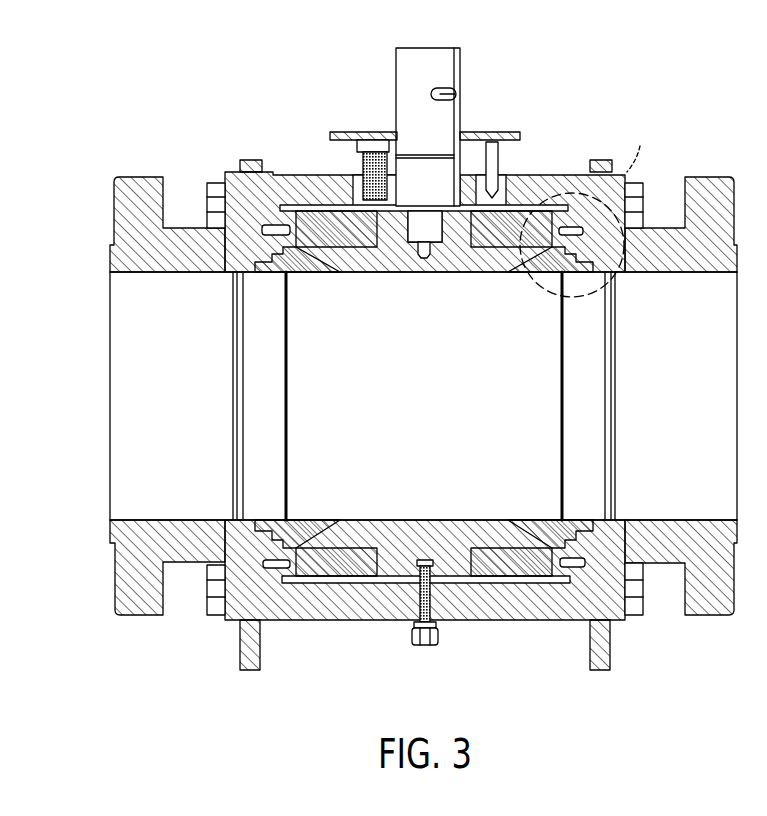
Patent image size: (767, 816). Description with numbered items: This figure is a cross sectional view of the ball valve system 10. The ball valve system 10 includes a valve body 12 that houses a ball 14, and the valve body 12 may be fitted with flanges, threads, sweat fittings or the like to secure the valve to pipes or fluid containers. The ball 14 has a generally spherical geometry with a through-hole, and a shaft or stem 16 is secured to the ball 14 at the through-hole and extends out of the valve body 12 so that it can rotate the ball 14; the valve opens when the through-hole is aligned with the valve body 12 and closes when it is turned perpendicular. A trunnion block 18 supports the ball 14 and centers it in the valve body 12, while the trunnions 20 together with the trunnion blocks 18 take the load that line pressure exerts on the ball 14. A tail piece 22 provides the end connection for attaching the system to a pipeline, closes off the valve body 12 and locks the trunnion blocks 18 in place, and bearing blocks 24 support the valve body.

The ball valve system 10 is at (607, 684).
The valve body 12 is at (319, 634).
The ball 14 is at (436, 405).
The stem 16 is at (437, 72).
The trunnion block 18 is at (336, 226).
The trunnion 20 is at (397, 218).
The tail piece 22 is at (131, 608).
The bearing block 24 is at (247, 655).